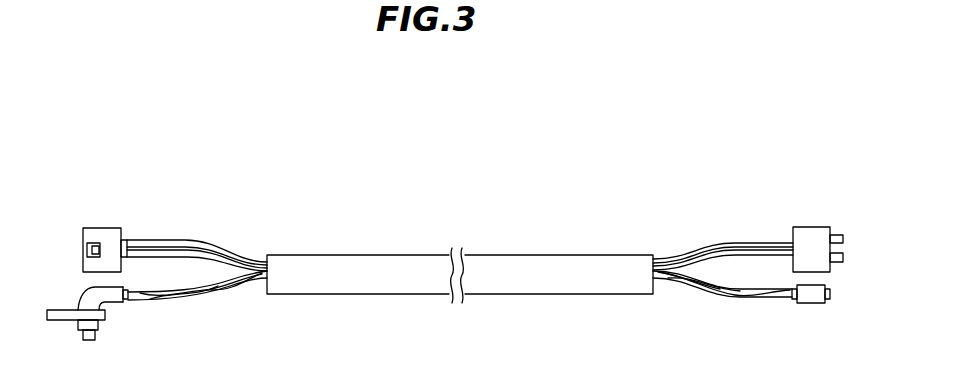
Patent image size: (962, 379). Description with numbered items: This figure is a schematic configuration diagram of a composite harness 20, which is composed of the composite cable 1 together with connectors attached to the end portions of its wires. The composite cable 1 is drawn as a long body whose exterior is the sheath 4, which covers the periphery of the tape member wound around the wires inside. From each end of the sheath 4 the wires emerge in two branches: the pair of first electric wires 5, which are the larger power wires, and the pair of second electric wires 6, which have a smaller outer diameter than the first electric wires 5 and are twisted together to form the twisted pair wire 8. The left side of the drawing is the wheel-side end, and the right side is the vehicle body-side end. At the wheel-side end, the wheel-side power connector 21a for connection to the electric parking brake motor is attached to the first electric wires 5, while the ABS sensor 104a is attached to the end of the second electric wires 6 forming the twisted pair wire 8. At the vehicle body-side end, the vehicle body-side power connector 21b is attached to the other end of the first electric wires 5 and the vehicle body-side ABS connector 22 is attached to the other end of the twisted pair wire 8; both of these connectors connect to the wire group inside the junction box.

The composite harness 20 is at (603, 204).
The composite cable 1 is at (485, 254).
The sheath 4 is at (579, 284).
The first electric wires 5 is at (163, 250).
The second electric wires 6 is at (165, 293).
The twisted pair wire 8 is at (211, 288).
The wheel-side power connector 21a is at (82, 255).
The vehicle body-side power connector 21b is at (845, 255).
The vehicle body-side ABS connector 22 is at (830, 293).
The ABS sensor 104a is at (83, 300).